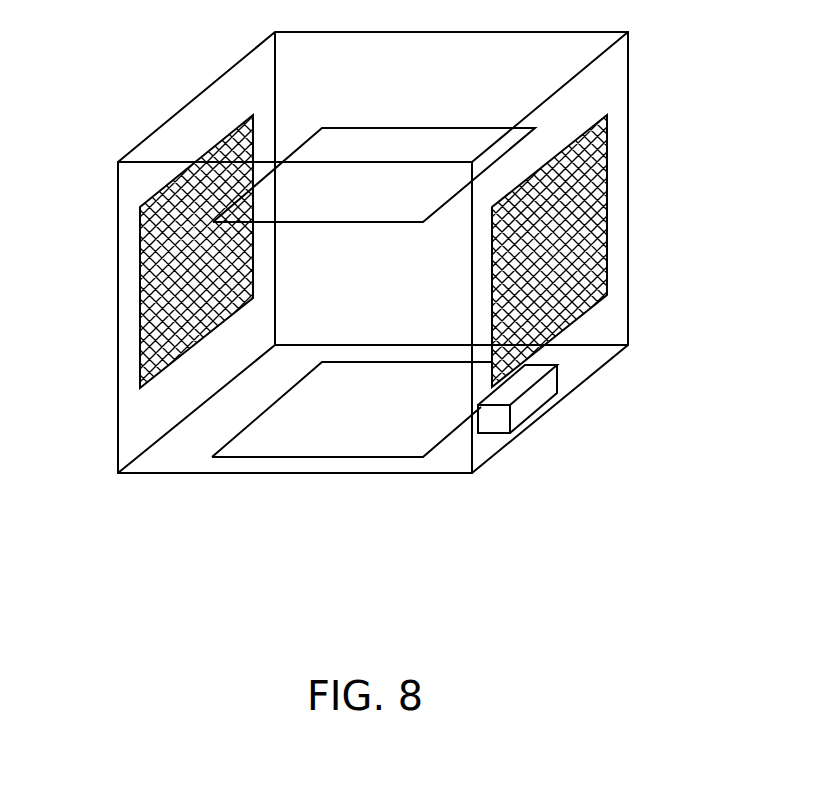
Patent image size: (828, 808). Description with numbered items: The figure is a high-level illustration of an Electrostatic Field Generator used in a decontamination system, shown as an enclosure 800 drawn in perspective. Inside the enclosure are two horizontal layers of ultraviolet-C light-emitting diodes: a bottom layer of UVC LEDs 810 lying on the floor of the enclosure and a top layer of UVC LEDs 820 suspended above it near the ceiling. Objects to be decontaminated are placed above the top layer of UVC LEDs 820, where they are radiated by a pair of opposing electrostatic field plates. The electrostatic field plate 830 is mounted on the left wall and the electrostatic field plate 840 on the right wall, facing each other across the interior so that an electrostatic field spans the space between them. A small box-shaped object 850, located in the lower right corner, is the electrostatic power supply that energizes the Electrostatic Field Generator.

The enclosure / housing 800 is at (178, 473).
The bottom layer of UVC LEDs 810 is at (418, 441).
The top layer of UVC LEDs 820 is at (250, 197).
The electrostatic field plate 830 is at (148, 240).
The electrostatic field plate 840 is at (602, 222).
The electrostatic power supply 850 is at (535, 397).